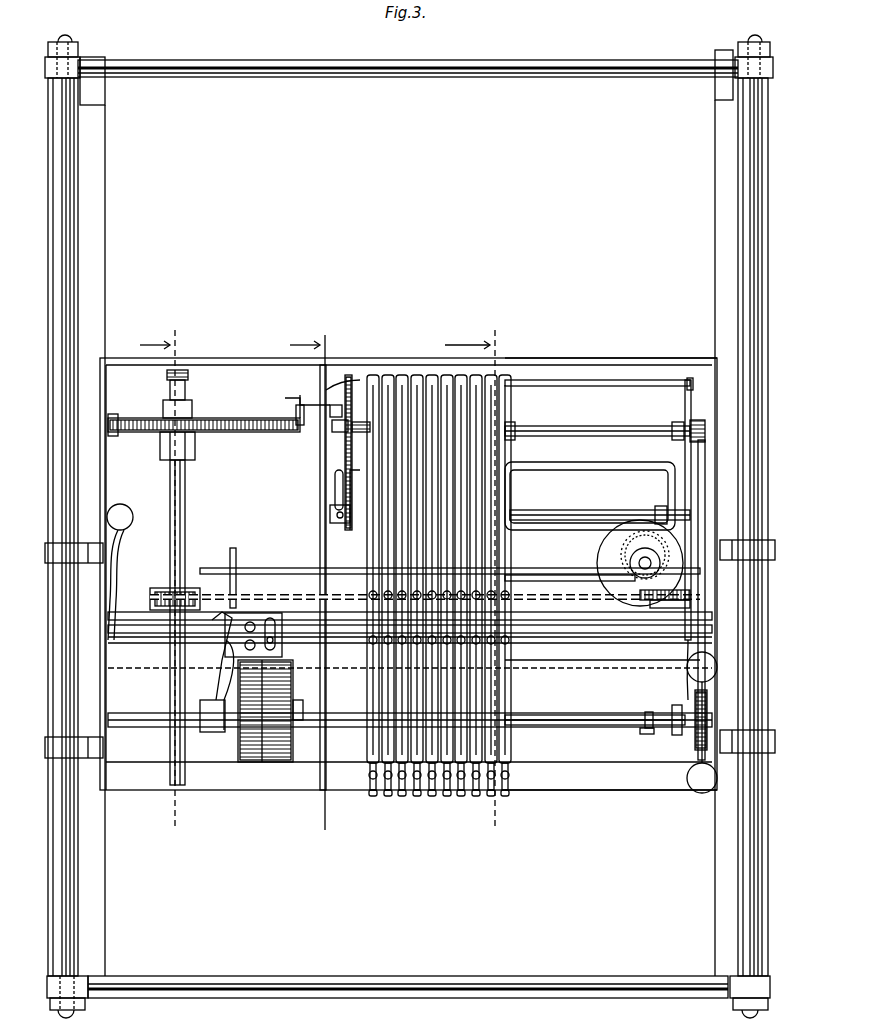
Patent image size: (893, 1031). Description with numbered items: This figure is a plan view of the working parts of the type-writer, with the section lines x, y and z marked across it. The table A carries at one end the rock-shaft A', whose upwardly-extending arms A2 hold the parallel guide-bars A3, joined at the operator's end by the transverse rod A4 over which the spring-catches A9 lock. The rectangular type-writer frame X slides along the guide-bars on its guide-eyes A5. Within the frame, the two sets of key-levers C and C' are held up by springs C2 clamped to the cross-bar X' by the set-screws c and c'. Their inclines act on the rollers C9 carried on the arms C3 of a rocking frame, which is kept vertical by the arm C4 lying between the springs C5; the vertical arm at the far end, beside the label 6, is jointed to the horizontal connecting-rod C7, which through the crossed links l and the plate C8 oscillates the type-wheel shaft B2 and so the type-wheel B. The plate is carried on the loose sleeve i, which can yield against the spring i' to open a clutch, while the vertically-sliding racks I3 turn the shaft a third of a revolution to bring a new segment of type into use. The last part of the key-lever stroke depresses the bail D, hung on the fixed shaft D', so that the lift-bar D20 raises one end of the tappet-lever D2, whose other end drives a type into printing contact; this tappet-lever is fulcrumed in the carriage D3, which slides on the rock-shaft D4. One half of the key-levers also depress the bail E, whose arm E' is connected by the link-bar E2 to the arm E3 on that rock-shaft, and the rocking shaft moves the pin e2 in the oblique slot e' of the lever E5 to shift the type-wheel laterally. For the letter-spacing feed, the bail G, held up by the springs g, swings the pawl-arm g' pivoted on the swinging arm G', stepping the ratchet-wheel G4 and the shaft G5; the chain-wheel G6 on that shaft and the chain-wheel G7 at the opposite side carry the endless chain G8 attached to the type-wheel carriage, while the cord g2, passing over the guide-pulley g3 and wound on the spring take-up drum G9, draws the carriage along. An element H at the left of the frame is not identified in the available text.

The table A is at (532, 197).
The rock-shaft A' is at (408, 57).
The upwardly-extending arms A2 is at (45, 68).
The guide-bars A3 is at (50, 270).
The transverse rod A4 is at (408, 976).
The guide-eyes A5 is at (790, 728).
The spring-catches A9 is at (90, 1003).
The type-writer frame X is at (611, 344).
The cross-bar X' is at (611, 777).
The section line x x is at (472, 576).
The section line y y is at (316, 575).
The section line z z is at (160, 574).
The type-wheel B is at (272, 711).
The rock-shaft B2 is at (595, 707).
The key-levers C is at (439, 569).
The key-levers C' is at (435, 570).
The springs C2 is at (428, 673).
The rigid arms C3 is at (334, 427).
The arm C4 is at (349, 375).
The vertical springs C5 is at (330, 408).
The connecting-rod C7 is at (690, 548).
The plate C8 is at (696, 745).
The rollers C9 is at (605, 420).
The set-screws c is at (438, 687).
The set-screws c' is at (448, 791).
The bail D is at (590, 486).
The horizontal shaft D' is at (600, 507).
The tappet-lever D2 is at (230, 560).
The carriage D3 is at (282, 630).
The rock-shaft D4 is at (410, 637).
The lift-bar D20 is at (295, 574).
The bail E is at (589, 496).
The upwardly-extending arm E' is at (713, 540).
The link-bar E2 is at (700, 545).
The arm E3 is at (695, 612).
The lever E5 is at (210, 700).
The oblique slot e' is at (206, 685).
The pin e2 is at (215, 625).
The bail G is at (597, 387).
The swinging arm G' is at (204, 435).
The ratchet-wheel G4 is at (161, 417).
The short shaft G5 is at (183, 515).
The chain-wheel G6 is at (150, 598).
The chain-wheel G7 is at (690, 582).
The endless chain G8 is at (530, 575).
The take-up drum G9 is at (640, 563).
The springs g is at (322, 500).
The pawl-arm g' is at (281, 408).
The tension strap or cord g2 is at (410, 679).
The guide-pulley g3 is at (680, 668).
The handle H is at (126, 536).
The vertically-sliding racks I3 is at (705, 690).
The loose sleeve i is at (642, 745).
The spring i' is at (646, 707).
The links l is at (674, 708).
The pin 6 is at (698, 387).